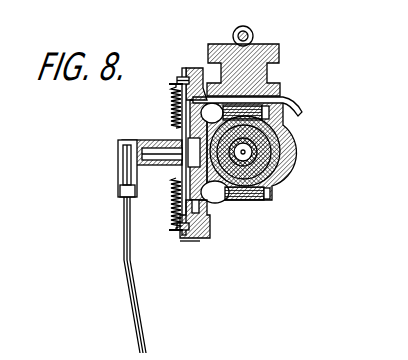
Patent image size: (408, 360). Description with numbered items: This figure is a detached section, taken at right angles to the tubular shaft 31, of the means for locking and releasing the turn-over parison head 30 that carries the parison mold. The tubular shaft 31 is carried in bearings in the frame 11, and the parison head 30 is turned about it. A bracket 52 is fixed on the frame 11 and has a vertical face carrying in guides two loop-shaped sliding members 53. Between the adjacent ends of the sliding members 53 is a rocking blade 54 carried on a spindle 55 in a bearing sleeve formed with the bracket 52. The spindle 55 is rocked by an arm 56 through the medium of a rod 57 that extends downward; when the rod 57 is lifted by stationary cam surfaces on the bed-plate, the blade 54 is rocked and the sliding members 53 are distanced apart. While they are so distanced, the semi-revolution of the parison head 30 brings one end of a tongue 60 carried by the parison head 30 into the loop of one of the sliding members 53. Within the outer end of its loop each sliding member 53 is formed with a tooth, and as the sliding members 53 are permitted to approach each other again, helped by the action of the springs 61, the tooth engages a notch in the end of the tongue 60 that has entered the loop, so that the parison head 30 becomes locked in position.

The frame 11 is at (263, 157).
The parison head 30 is at (281, 85).
The tubular shaft 31 is at (256, 150).
The bracket 52 is at (205, 185).
The sliding members 53 is at (187, 68).
The rocking blade 54 is at (175, 142).
The spindle 55 is at (156, 148).
The arm 56 is at (122, 158).
The rod 57 is at (126, 268).
The tongue 60 is at (303, 109).
The springs 61 is at (176, 101).